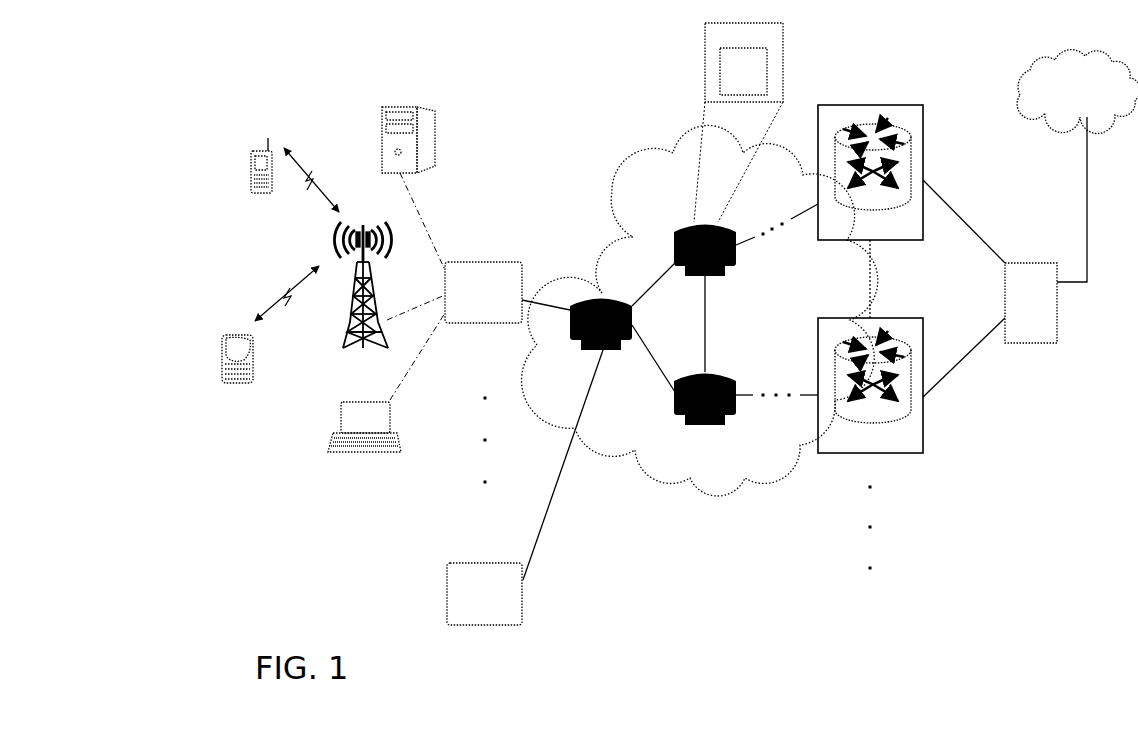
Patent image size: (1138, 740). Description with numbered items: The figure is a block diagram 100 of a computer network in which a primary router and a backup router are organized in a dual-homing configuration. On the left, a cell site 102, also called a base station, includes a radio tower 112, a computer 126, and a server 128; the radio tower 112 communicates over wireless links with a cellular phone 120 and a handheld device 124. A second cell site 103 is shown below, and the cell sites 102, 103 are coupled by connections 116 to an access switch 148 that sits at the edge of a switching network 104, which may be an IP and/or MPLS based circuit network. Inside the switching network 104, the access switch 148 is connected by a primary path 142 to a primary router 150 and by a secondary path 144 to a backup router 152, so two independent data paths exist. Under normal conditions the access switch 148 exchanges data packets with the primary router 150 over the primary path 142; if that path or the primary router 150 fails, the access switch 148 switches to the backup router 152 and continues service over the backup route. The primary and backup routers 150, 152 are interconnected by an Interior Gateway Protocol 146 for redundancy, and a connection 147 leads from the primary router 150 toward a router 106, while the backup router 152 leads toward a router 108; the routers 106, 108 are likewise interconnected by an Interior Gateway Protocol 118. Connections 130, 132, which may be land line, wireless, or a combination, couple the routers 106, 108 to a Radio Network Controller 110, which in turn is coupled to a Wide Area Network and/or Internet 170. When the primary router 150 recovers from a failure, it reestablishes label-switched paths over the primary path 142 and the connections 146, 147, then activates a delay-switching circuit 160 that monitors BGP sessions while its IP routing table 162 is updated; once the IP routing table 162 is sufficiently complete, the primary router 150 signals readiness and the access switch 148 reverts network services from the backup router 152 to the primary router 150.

The block diagram 100 is at (321, 41).
The cell site 102 is at (510, 262).
The cell site 103 is at (490, 563).
The switching network 104 is at (693, 135).
The router 106 is at (860, 233).
The router 108 is at (860, 445).
The Radio Network Controller 110 is at (1018, 311).
The radio tower 112 is at (373, 352).
The connections 116 is at (573, 427).
The Interior Gateway Protocol 118 is at (872, 297).
The cellular phone 120 is at (264, 150).
The handheld device 124 is at (255, 380).
The computer 126 is at (352, 428).
The server 128 is at (438, 168).
The connection 130 is at (970, 226).
The connection 132 is at (974, 356).
The primary path 142 is at (663, 277).
The secondary path 144 is at (650, 353).
The Interior Gateway Protocol 146 is at (706, 335).
The connection 147 is at (736, 236).
The access switch 148 is at (600, 297).
The primary router 150 is at (718, 242).
The backup router 152 is at (734, 380).
The delay-switching circuit 160 is at (731, 44).
The IP routing table 162 is at (731, 81).
The Wide Area Network and/or Internet 170 is at (1062, 96).